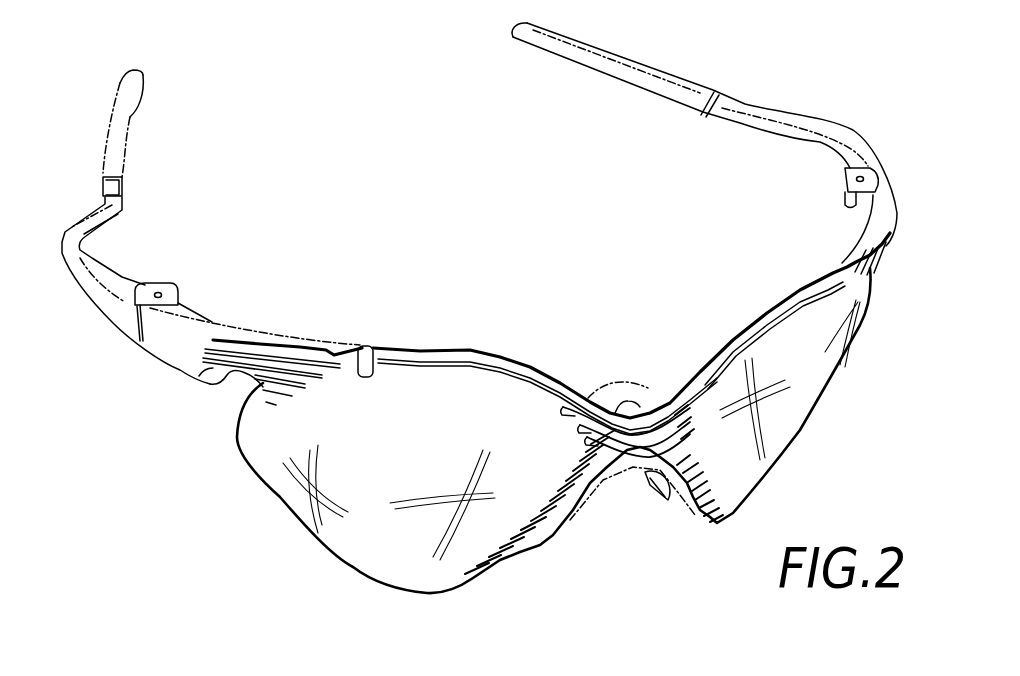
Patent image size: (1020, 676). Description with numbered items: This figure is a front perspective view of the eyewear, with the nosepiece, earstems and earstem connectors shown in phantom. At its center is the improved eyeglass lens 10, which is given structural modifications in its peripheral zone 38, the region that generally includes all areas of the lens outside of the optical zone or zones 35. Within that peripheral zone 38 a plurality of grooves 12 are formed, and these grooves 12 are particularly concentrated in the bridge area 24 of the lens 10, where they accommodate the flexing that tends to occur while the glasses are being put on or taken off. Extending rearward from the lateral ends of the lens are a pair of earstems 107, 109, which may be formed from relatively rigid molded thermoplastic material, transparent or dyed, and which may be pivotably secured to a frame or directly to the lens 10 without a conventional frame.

The eyeglass lens 10 is at (462, 308).
The grooves 12 is at (668, 428).
The bridge area 24 is at (643, 412).
The optical zone 35 is at (810, 410).
The peripheral zone 38 is at (800, 293).
The earstem 107 is at (137, 212).
The earstem 109 is at (740, 143).